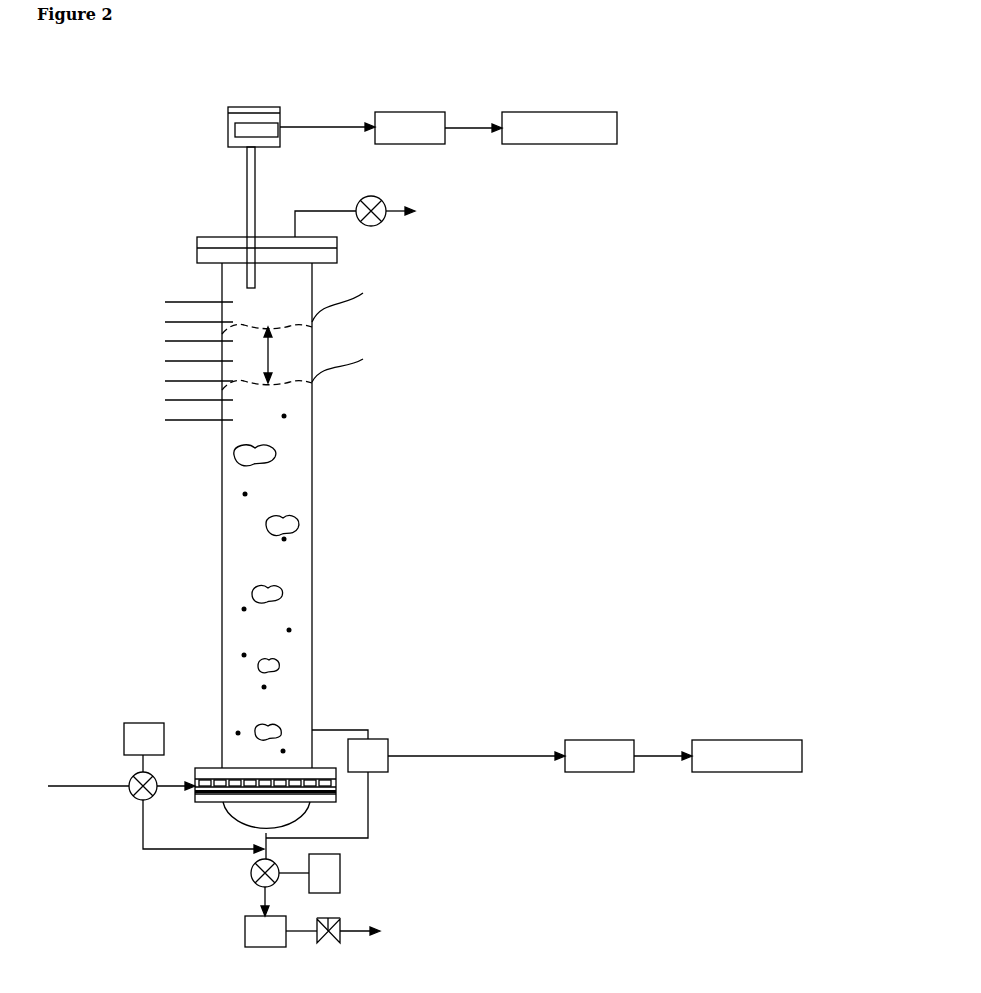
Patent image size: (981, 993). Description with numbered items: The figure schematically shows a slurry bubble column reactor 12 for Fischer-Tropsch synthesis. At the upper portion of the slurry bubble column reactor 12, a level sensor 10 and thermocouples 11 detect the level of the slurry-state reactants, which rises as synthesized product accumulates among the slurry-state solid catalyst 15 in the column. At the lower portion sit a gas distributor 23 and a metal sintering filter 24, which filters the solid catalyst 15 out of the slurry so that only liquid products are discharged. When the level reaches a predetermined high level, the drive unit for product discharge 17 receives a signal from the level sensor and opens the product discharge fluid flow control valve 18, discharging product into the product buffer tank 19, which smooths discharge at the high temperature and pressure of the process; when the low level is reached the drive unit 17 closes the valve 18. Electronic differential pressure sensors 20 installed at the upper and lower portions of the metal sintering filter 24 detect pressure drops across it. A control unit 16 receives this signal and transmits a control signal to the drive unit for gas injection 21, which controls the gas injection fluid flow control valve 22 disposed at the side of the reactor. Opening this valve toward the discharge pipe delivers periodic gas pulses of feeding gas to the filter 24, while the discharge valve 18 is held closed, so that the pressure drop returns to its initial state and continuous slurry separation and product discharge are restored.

The level sensor 10 is at (228, 133).
The thermocouples 11 is at (178, 302).
The slurry bubble column reactor 12 is at (320, 468).
The slurry-state solid catalyst 15 is at (289, 630).
The control unit 16 is at (420, 144).
The drive unit for product discharge 17 is at (553, 144).
The product discharge fluid flow control valve 18 is at (251, 878).
The product buffer tank 19 is at (245, 930).
The electronic differential pressure sensors 20 is at (378, 739).
The drive unit for gas injection 21 is at (139, 723).
The gas injection fluid flow control valve 22 is at (133, 796).
The gas distributor 23 is at (337, 776).
The metal sintering filter 24 is at (337, 790).